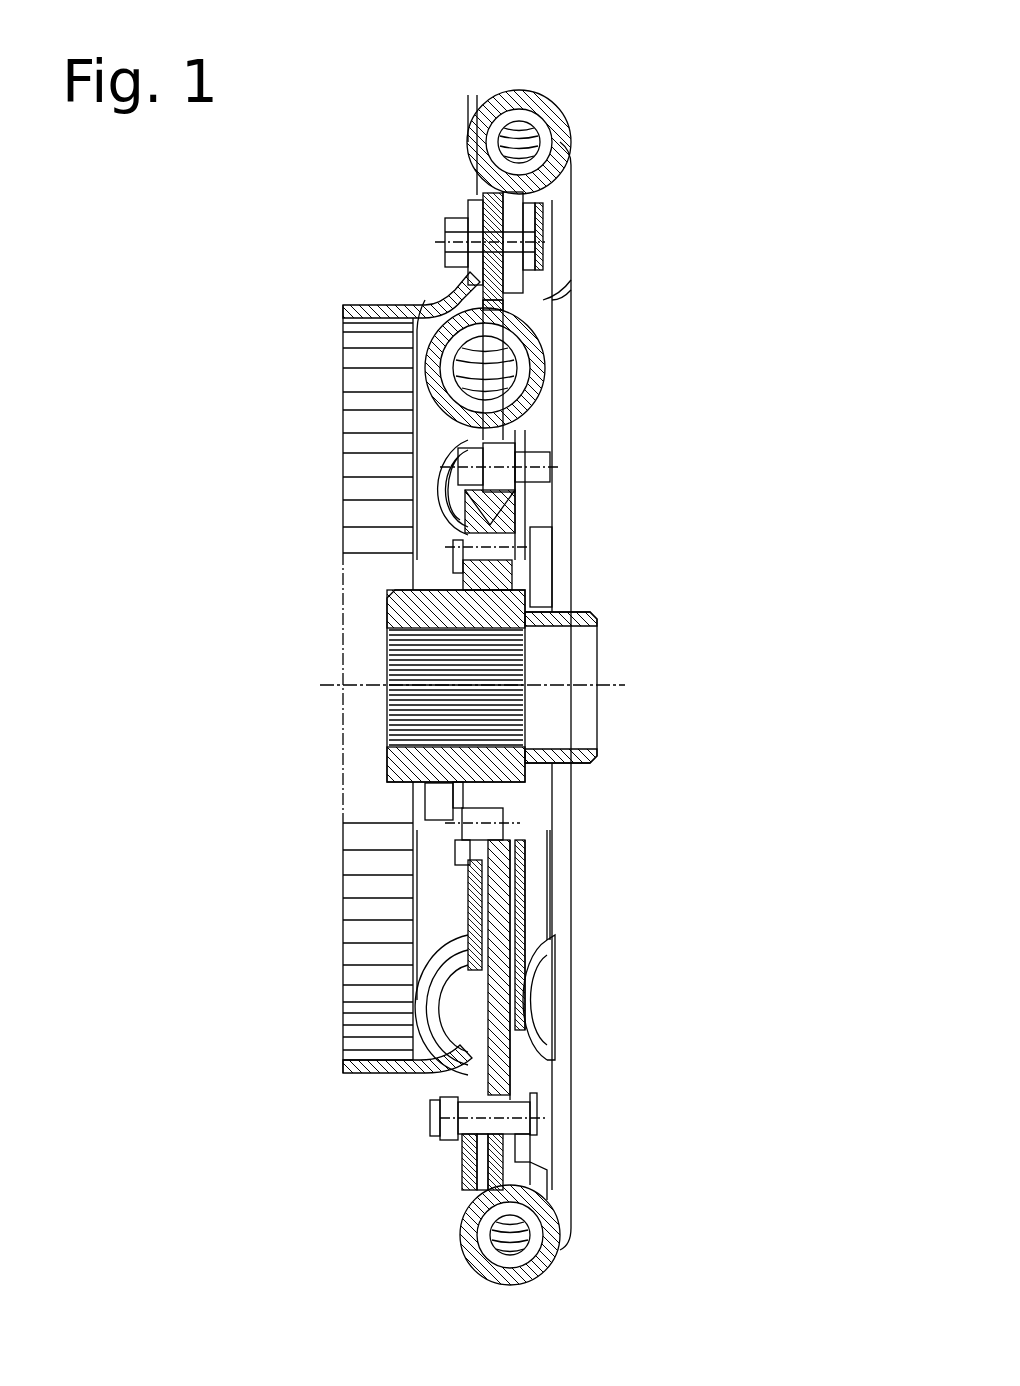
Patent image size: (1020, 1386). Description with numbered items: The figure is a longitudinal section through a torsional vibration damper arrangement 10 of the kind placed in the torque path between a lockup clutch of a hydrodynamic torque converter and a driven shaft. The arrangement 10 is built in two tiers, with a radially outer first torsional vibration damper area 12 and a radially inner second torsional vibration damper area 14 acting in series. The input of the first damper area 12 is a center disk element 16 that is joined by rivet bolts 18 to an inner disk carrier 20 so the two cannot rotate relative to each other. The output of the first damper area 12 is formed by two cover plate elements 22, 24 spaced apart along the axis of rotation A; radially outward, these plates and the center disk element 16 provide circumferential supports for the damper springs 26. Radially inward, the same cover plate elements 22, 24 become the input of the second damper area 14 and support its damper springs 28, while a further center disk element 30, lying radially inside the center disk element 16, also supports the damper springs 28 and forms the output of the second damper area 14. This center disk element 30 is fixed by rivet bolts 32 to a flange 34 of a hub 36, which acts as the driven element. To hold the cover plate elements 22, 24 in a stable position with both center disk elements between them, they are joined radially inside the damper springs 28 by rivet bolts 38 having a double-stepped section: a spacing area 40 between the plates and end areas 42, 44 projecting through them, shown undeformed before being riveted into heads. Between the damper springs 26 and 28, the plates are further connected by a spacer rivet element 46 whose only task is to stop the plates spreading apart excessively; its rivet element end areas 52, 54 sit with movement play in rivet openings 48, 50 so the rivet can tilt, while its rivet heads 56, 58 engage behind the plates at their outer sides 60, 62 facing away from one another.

The torsional vibration damper arrangement 10 is at (655, 155).
The first torsional vibration damper area 12 is at (425, 108).
The second torsional vibration damper area 14 is at (655, 340).
The center disk element 16 is at (497, 206).
The rivet bolts 18 is at (447, 237).
The inner disk carrier 20 is at (343, 337).
The cover plate element 22 is at (447, 282).
The cover plate element 24 is at (533, 242).
The damper springs 26 is at (545, 148).
The damper springs 28 is at (517, 423).
The center disk element 30 is at (503, 505).
The rivet bolts 32 is at (487, 832).
The flange 34 is at (462, 798).
The hub 36 is at (598, 728).
The rivet bolts 38 is at (530, 478).
The spacing area 40 is at (463, 478).
The end area 42 is at (497, 480).
The end area 44 is at (530, 463).
The spacer rivet element 46 is at (535, 1130).
The rivet opening 48 is at (475, 1165).
The rivet opening 50 is at (525, 1080).
The rivet element end area 52 is at (447, 1125).
The rivet element end area 54 is at (535, 1118).
The rivet head 56 is at (460, 1112).
The rivet head 58 is at (537, 1124).
The outer side 60 is at (462, 1183).
The outer side 62 is at (537, 1165).
The axis of rotation A is at (617, 686).